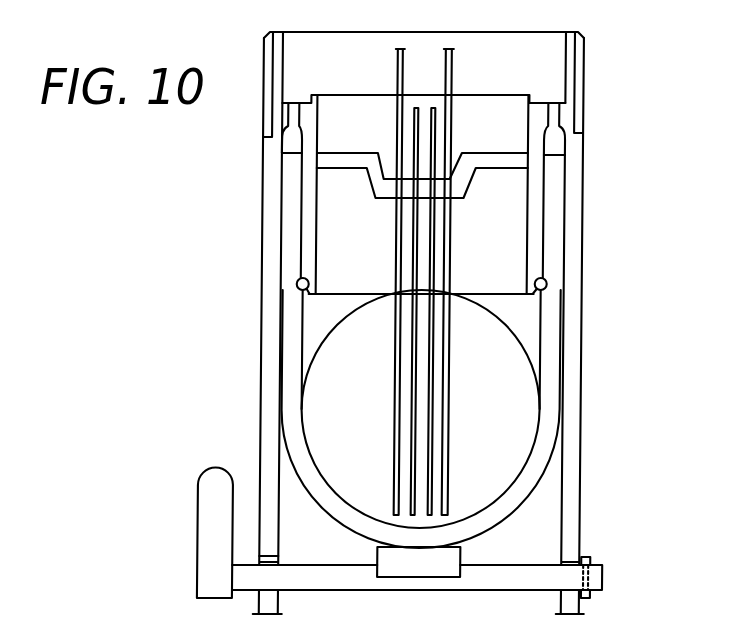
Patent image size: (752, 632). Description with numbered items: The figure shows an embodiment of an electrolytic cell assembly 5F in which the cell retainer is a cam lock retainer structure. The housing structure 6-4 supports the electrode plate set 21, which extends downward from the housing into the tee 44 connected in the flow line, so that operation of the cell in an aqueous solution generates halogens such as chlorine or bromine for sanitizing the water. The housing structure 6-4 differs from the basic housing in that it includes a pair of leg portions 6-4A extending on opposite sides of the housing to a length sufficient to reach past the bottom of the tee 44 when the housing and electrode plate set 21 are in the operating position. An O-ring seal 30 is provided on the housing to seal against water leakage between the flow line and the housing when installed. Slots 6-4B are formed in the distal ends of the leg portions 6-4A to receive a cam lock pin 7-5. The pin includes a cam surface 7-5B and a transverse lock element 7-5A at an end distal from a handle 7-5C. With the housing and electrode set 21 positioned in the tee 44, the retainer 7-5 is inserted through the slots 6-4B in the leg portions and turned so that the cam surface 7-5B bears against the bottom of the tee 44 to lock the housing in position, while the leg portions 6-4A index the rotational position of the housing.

The electrolytic cell assembly 5F is at (612, 78).
The housing structure 6-4 is at (578, 108).
The leg portions 6-4A is at (266, 347).
The slots 6-4B is at (272, 560).
The O-ring seal 30 is at (549, 283).
The electrode plate set 21 is at (466, 426).
The tee 44 is at (539, 467).
The cam lock pin 7-5 is at (327, 583).
The transverse lock element 7-5A is at (597, 599).
The cam surface 7-5B is at (433, 555).
The handle 7-5C is at (212, 557).